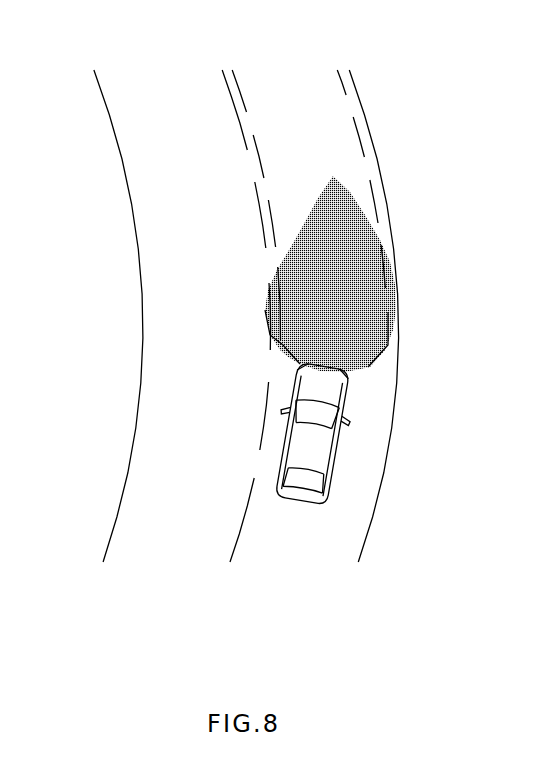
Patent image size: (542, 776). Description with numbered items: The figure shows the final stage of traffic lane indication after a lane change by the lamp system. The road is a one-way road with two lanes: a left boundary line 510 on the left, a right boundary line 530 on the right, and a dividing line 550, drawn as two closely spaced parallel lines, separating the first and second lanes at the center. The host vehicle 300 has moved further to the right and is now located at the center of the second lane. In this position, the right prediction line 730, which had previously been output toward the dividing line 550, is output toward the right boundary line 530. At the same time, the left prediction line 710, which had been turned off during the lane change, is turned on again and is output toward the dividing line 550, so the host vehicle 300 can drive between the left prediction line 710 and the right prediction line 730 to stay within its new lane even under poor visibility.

The left boundary line 510 is at (115, 137).
The right boundary line 530 is at (393, 228).
The dividing line 550 is at (260, 218).
The left prediction line 710 is at (244, 107).
The right prediction line 730 is at (360, 131).
The host vehicle 300 is at (299, 505).